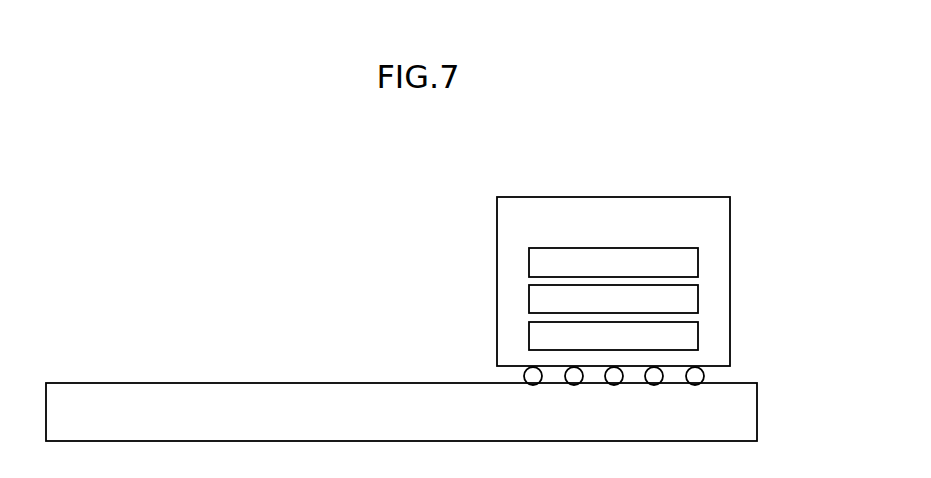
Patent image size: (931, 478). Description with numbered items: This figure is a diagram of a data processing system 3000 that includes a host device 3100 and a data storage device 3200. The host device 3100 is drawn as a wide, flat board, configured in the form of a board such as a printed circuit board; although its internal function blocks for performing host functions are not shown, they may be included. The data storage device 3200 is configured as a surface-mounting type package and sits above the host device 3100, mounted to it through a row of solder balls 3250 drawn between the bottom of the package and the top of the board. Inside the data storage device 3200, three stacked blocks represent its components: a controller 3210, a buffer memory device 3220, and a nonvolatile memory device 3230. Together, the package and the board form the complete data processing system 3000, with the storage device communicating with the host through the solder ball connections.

The data processing system 3000 is at (110, 139).
The host device 3100 is at (401, 412).
The data storage device 3200 is at (613, 281).
The controller 3210 is at (613, 263).
The buffer memory device 3220 is at (613, 300).
The nonvolatile memory device 3230 is at (613, 337).
The solder balls 3250 is at (715, 375).